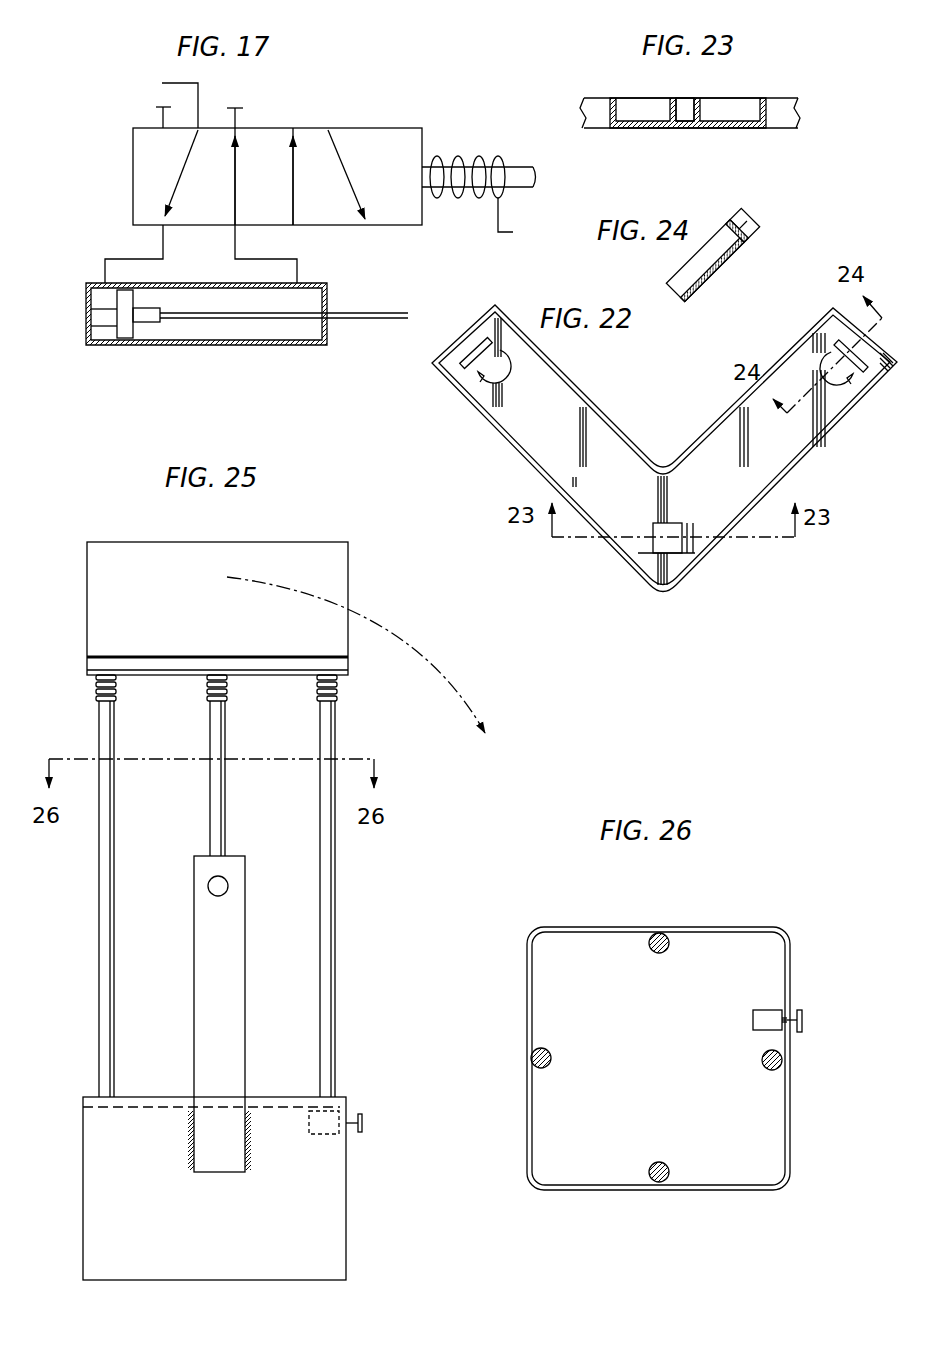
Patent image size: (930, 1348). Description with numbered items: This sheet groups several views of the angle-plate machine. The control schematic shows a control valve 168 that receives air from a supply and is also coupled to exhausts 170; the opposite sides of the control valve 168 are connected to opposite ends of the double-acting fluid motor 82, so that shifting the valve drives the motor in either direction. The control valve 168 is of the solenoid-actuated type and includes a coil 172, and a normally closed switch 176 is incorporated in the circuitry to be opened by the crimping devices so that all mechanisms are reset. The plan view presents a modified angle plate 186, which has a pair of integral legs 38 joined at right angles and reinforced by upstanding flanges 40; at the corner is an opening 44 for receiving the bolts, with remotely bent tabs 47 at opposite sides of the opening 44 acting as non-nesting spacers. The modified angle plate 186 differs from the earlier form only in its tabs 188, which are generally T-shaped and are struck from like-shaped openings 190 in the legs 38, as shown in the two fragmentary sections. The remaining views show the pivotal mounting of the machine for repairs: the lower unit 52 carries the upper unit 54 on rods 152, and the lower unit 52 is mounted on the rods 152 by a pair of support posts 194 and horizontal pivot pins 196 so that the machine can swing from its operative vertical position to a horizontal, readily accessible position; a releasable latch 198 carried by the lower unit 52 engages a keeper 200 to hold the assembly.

In FIG. 17, the control valve 168 is at (281, 122).
In FIG. 17, the exhausts 170 is at (163, 106).
In FIG. 17, the coil 172 is at (452, 165).
In FIG. 17, the normally closed switch 176 is at (513, 234).
In FIG. 17, the fluid motor 82 is at (275, 350).
In FIG. 23, the angle plate 186 is at (793, 134).
In FIG. 24, the angle plate 186 is at (770, 237).
In FIG. 22, the angle plate 186 is at (477, 437).
In FIG. 23, the remotely bent tabs 47 is at (657, 106).
In FIG. 22, the remotely bent tabs 47 is at (650, 528).
In FIG. 23, the opening 44 is at (688, 107).
In FIG. 22, the opening 44 is at (671, 523).
In FIG. 24, the tabs 188 is at (735, 222).
In FIG. 22, the tabs 188 is at (487, 342).
In FIG. 24, the openings 190 is at (738, 254).
In FIG. 22, the openings 190 is at (503, 362).
In FIG. 22, the upstanding flanges 40 is at (578, 392).
In FIG. 22, the legs 38 is at (503, 409).
In FIG. 25, the upper unit 54 is at (234, 618).
In FIG. 25, the rods 152 is at (114, 805).
In FIG. 26, the rods 152 is at (663, 952).
In FIG. 25, the support posts 194 is at (194, 1004).
In FIG. 25, the horizontal pivot pins 196 is at (209, 888).
In FIG. 25, the lower unit 52 is at (82, 1204).
In FIG. 26, the lower unit 52 is at (794, 1133).
In FIG. 25, the releasable latch 198 is at (363, 1117).
In FIG. 26, the releasable latch 198 is at (803, 1028).
In FIG. 25, the keeper 200 is at (325, 1136).
In FIG. 26, the keeper 200 is at (753, 1030).